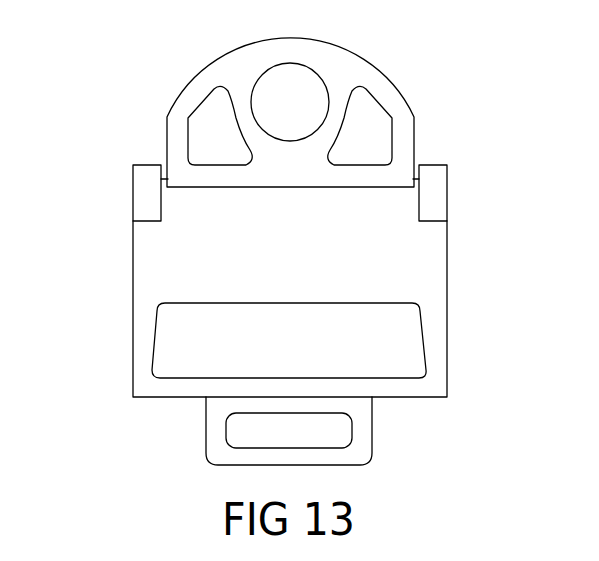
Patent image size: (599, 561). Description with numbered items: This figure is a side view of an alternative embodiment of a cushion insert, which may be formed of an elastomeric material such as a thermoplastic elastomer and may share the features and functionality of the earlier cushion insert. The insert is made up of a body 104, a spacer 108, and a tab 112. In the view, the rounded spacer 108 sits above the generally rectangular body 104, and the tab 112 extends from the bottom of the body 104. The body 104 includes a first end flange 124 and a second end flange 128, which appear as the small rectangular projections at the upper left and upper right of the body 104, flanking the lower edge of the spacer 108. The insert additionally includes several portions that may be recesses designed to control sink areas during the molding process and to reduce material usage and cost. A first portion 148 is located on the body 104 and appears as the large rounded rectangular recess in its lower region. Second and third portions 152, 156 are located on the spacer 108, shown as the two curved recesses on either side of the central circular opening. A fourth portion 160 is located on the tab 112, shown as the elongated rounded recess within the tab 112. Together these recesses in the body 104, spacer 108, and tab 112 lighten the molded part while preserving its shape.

The body 104 is at (153, 254).
The spacer 108 is at (350, 53).
The tab 112 is at (206, 422).
The first end flange 124 is at (146, 177).
The second end flange 128 is at (433, 177).
The first portion 148 is at (397, 336).
The second portion 152 is at (213, 130).
The third portion 156 is at (367, 130).
The fourth portion 160 is at (337, 427).